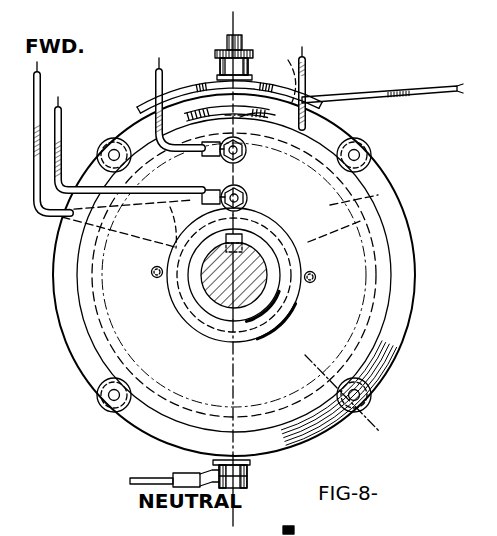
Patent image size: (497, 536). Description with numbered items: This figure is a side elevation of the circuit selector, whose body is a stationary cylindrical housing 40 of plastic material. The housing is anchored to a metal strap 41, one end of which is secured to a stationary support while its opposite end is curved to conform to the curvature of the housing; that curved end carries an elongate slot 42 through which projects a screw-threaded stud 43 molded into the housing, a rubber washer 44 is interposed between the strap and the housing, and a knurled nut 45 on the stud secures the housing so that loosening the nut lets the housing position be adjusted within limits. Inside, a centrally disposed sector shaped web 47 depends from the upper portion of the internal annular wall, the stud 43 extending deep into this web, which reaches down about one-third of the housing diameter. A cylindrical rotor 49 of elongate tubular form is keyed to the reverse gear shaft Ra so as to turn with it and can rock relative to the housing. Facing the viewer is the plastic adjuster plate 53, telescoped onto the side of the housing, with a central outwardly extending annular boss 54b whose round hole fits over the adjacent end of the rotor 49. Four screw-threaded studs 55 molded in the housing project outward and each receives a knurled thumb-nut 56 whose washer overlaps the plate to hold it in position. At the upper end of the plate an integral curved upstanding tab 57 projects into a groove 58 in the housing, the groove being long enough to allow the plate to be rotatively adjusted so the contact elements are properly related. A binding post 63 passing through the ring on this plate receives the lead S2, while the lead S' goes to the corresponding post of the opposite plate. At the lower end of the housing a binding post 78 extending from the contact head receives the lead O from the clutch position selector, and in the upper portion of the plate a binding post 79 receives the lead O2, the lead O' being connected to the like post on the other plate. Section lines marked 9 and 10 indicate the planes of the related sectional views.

The stationary cylindrical housing 40 is at (397, 321).
The metal strap 41 is at (422, 84).
The elongate slot 42 is at (240, 82).
The screw-threaded stud 43 is at (242, 42).
The rubber washer 44 is at (208, 88).
The knurled nut 45 is at (215, 70).
The sector shaped web 47 is at (378, 195).
The cylindrical rotor 49 is at (273, 287).
The adjuster plate 53 is at (285, 387).
The annular boss 54b is at (218, 338).
The screw-threaded studs 55 is at (372, 392).
The knurled thumb-nuts 56 is at (366, 140).
The upstanding tab 57 is at (243, 118).
The groove 58 is at (268, 110).
The binding post 63 is at (246, 188).
The binding post 78 is at (238, 494).
The binding post 79 is at (250, 128).
The reverse gear shaft Ra is at (262, 267).
The section line 9- 9 is at (233, 20).
The section line 10- 10 is at (328, 368).
The lead S' is at (232, 130).
The lead S2 is at (63, 123).
The lead O' is at (325, 81).
The lead O2 is at (156, 78).
The lead O is at (155, 492).